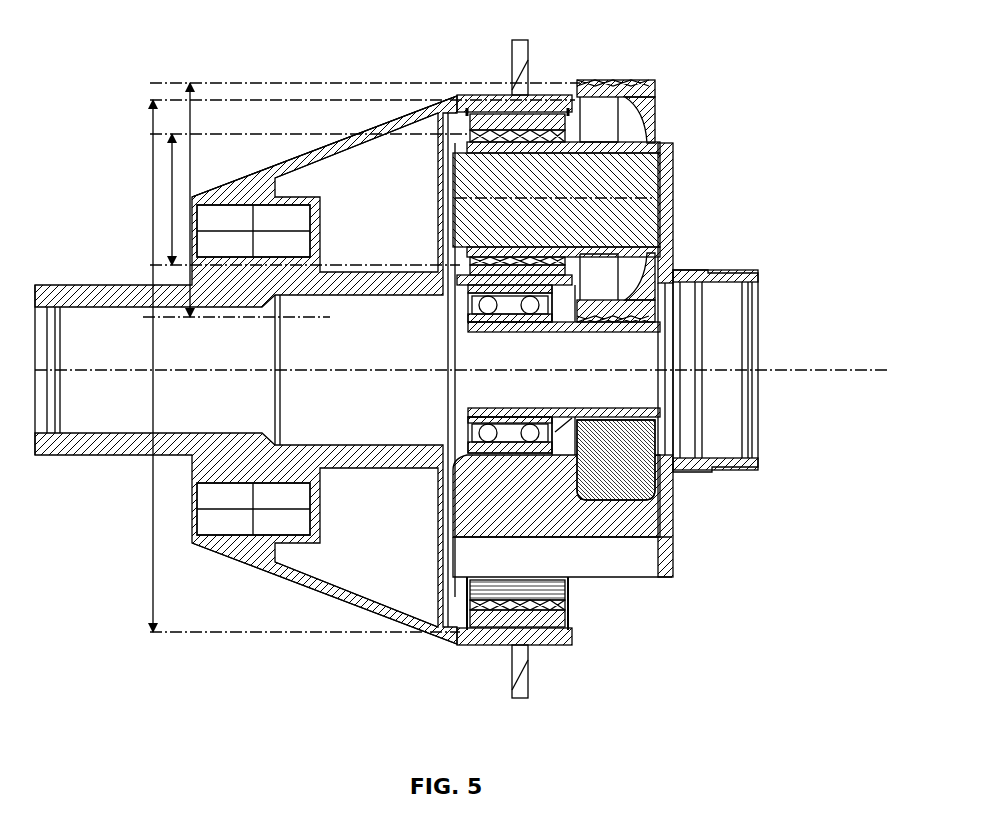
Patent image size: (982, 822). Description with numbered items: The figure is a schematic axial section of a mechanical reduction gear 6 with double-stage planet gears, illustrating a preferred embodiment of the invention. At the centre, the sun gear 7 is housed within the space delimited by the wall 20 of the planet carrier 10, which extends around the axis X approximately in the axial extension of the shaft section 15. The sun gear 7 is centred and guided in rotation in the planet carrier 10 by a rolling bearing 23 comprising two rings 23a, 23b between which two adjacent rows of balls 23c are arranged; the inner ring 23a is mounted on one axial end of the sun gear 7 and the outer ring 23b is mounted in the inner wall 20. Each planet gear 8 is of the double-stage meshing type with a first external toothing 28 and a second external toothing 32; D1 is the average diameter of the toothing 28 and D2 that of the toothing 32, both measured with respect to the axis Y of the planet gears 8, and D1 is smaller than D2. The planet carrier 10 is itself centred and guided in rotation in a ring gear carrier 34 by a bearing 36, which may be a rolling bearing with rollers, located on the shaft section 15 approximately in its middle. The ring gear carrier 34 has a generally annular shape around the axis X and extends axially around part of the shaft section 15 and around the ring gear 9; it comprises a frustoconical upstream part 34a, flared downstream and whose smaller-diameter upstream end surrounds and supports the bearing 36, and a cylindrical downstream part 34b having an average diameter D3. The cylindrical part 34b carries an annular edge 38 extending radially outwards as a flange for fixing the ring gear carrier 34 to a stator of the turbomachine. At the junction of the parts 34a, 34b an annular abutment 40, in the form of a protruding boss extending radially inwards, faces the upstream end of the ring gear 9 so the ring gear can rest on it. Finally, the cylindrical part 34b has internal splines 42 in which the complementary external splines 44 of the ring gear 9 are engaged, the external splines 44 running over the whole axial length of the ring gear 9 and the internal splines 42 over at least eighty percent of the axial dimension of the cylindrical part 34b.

The reduction gear 6 is at (755, 98).
The sun gear 7 is at (622, 333).
The planet gears 8 is at (658, 105).
The ring gear 9 is at (525, 120).
The planet carrier 10 is at (683, 163).
The shaft section 15 is at (123, 447).
The wall 20 is at (466, 298).
The rolling bearing 23 is at (466, 413).
The inner ring 23a is at (503, 420).
The outer ring 23b is at (584, 410).
The balls 23c is at (529, 312).
The first external toothing 28 is at (553, 130).
The second external toothing 32 is at (630, 86).
The ring gear carrier 34 is at (362, 133).
The frustoconical upstream part 34a is at (313, 160).
The cylindrical downstream part 34b is at (488, 98).
The bearing 36 is at (278, 238).
The annular edge 38 is at (522, 700).
The annular abutment 40 is at (447, 642).
The internal splines 42 is at (558, 642).
The external splines 44 is at (538, 654).
The average diameter of the first toothing D1 is at (172, 218).
The average diameter of the second toothing D2 is at (192, 118).
The average diameter of the cylindrical part D3 is at (132, 366).
The axis X is at (838, 370).
The axis of the planet gears Y is at (660, 200).